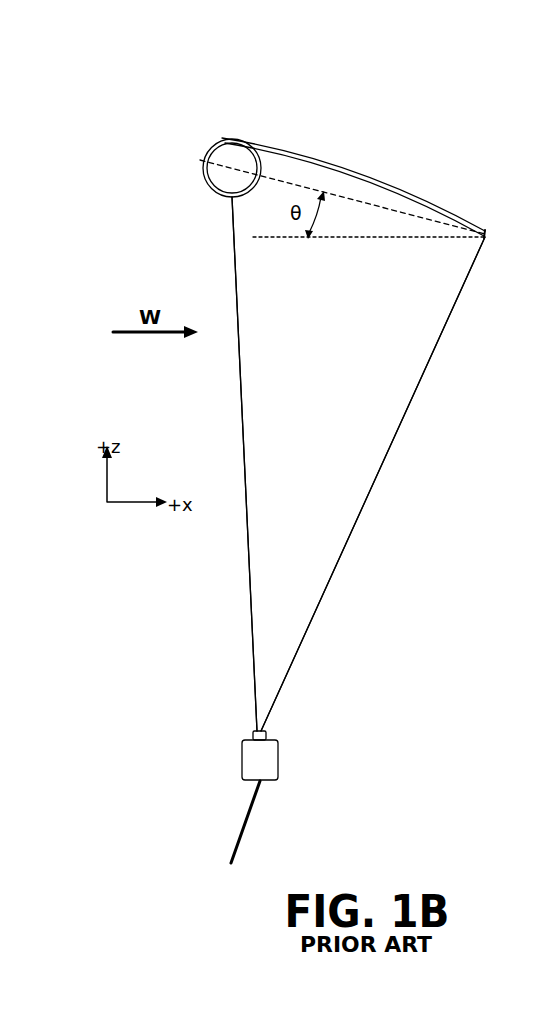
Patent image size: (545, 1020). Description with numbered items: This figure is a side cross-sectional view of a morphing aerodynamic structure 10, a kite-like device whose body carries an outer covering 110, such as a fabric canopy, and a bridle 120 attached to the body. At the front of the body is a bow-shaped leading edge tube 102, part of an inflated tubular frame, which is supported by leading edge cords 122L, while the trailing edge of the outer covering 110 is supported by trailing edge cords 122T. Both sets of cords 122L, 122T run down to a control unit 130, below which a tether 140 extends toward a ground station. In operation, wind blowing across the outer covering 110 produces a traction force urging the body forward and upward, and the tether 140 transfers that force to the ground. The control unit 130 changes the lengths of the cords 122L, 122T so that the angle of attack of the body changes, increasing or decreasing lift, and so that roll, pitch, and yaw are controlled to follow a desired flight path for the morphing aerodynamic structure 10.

The morphing aerodynamic structure 10 is at (465, 113).
The leading edge tube 102 is at (203, 156).
The outer covering 110 is at (357, 166).
The bridle 120 is at (212, 390).
The leading edge cords 122L is at (243, 406).
The trailing edge cords 122T is at (413, 400).
The control unit 130 is at (286, 756).
The tether 140 is at (242, 822).